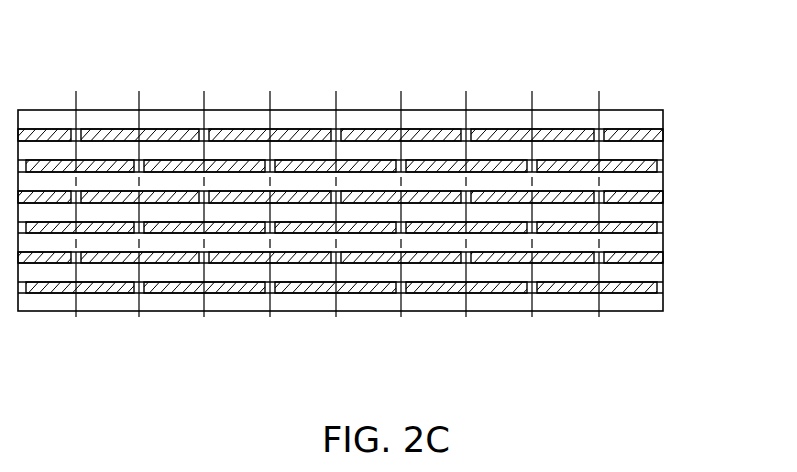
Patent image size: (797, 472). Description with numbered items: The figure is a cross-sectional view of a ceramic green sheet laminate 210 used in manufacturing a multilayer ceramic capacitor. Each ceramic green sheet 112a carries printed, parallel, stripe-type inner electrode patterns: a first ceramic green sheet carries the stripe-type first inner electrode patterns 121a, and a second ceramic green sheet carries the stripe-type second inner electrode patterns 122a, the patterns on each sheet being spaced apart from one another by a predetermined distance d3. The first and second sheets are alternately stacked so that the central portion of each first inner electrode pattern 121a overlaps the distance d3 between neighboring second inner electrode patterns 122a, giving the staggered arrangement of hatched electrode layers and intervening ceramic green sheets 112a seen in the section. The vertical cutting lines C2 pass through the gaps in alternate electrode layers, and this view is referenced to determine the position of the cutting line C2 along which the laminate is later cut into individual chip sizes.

The ceramic green sheet laminate 210 is at (90, 39).
The ceramic green sheet 112a is at (650, 212).
The stripe-type first inner electrode pattern 121a is at (665, 228).
The stripe-type second inner electrode pattern 122a is at (640, 185).
The cutting line C2 is at (337, 206).
The predetermined distance d3 is at (479, 87).